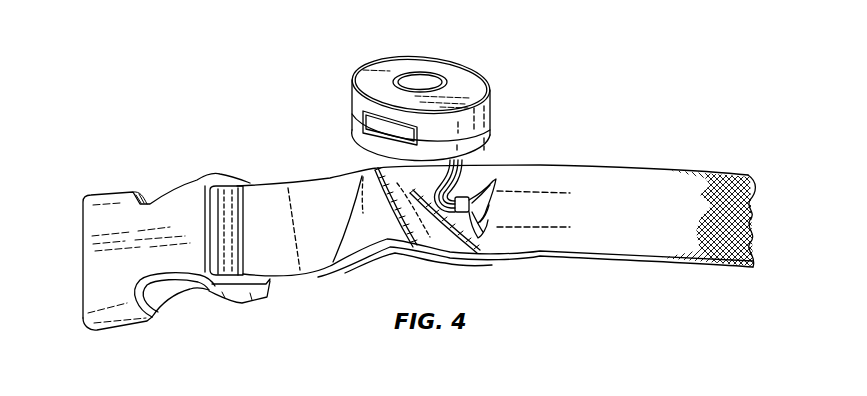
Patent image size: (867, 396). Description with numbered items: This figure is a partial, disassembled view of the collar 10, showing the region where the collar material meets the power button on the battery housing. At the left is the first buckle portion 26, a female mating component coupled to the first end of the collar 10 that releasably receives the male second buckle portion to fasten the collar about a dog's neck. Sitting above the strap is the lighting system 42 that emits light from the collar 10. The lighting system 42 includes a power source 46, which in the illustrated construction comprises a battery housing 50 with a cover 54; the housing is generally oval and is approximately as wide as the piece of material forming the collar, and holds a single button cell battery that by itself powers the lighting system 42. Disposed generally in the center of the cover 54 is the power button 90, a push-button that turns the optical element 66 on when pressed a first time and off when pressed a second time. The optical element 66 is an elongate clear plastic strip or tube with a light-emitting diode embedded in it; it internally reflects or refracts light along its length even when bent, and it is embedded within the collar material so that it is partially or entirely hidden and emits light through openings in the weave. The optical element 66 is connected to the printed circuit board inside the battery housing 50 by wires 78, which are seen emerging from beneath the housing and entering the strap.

The collar 10 is at (252, 101).
The first buckle portion 26 is at (122, 215).
The lighting system 42 is at (462, 55).
The power source 46 is at (367, 81).
The battery housing 50 is at (482, 86).
The cover 54 is at (437, 70).
The optical element 66 is at (470, 219).
The wires 78 is at (374, 170).
The power button 90 is at (417, 80).